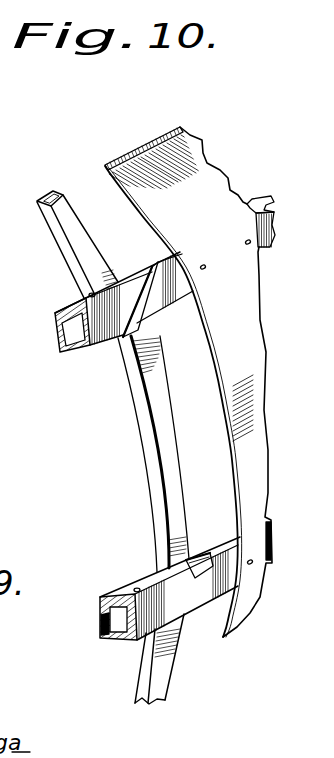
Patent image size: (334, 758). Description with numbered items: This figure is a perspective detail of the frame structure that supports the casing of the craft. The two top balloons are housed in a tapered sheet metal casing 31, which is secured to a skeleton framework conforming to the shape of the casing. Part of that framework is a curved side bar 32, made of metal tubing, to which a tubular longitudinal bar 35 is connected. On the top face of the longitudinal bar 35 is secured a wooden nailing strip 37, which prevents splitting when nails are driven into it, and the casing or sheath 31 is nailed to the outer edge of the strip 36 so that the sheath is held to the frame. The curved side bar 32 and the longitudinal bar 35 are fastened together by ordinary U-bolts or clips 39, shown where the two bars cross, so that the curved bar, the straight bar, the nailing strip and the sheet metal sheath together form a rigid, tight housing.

The sheet metal casing 31 is at (224, 371).
The curved side bars 32 is at (70, 212).
The longitudinal bars 35 is at (86, 362).
The nailing strips 36 is at (67, 310).
The wooden nailing strips 37 is at (95, 293).
The U-bolts or clips 39 is at (156, 265).